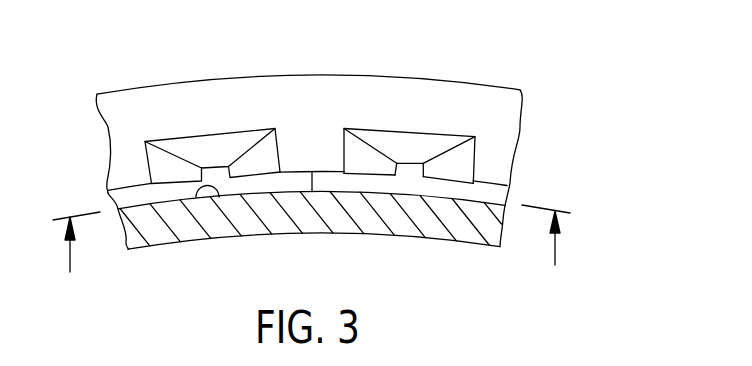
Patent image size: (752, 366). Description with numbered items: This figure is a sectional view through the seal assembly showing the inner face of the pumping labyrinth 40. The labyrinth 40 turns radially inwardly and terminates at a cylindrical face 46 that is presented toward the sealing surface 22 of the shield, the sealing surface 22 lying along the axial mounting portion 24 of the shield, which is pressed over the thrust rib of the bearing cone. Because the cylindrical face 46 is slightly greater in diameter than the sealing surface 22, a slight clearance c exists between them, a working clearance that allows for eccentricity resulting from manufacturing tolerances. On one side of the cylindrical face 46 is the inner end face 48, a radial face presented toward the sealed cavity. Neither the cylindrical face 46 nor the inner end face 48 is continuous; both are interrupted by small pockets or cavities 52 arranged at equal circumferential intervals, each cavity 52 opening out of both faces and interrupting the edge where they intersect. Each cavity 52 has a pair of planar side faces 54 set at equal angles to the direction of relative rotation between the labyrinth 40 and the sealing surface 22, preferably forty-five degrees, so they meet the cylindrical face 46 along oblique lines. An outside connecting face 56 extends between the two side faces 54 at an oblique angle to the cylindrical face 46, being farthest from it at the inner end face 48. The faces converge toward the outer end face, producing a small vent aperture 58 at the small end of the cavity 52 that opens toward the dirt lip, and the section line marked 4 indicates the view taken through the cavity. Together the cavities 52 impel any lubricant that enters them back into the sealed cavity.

The labyrinth 40 is at (108, 127).
The inner end face 48 is at (140, 107).
The clearance c is at (112, 196).
The cavities 52 is at (210, 147).
The side faces 54 is at (352, 153).
The connecting face 56 is at (425, 143).
The vent aperture 58 is at (410, 172).
The cylindrical face 46 is at (312, 192).
The axial mounting portion 24 is at (182, 225).
The sealing surface 22 is at (215, 193).
The section line 4- 4 is at (314, 229).